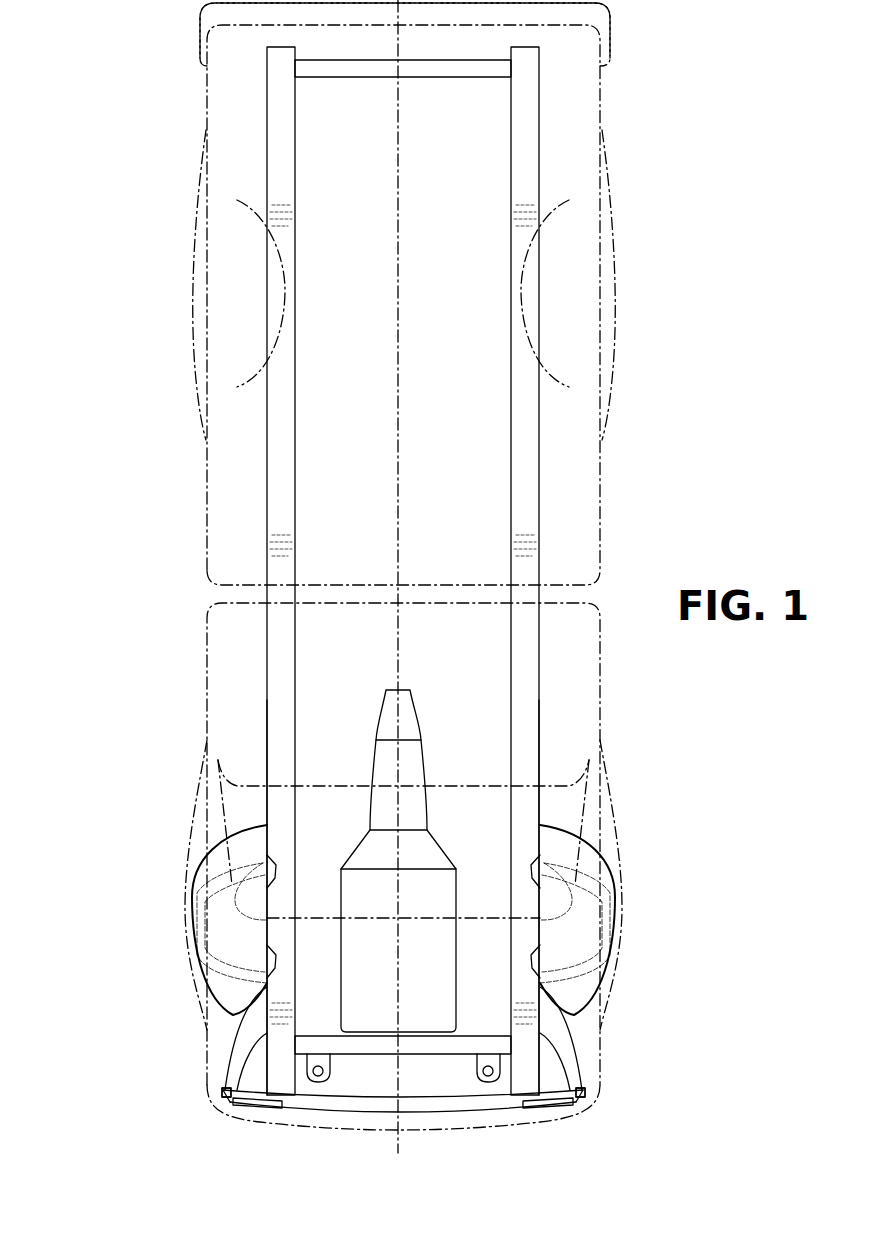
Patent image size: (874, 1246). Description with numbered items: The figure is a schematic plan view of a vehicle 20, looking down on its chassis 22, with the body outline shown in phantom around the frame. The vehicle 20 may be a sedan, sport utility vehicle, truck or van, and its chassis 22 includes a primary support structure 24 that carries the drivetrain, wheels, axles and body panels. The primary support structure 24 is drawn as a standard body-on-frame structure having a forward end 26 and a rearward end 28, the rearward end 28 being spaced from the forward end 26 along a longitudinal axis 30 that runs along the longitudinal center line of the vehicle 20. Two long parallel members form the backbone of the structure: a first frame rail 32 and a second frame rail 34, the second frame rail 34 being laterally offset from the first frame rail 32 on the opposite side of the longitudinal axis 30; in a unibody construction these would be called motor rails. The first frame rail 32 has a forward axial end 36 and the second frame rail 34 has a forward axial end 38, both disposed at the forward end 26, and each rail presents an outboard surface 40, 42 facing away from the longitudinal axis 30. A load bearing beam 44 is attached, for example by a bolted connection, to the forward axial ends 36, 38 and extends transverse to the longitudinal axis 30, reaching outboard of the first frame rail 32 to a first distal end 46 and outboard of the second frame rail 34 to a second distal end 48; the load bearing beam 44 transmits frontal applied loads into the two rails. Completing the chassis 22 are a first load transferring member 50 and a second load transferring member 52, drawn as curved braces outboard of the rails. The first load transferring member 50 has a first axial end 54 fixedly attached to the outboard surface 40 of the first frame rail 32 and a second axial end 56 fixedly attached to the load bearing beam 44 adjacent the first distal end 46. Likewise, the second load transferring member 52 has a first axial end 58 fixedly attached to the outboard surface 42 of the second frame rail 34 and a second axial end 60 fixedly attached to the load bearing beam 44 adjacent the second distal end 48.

The vehicle 20 is at (125, 78).
The chassis 22 is at (402, 571).
The primary support structure 24 is at (206, 571).
The forward end 26 is at (352, 1130).
The rearward end 28 is at (638, 0).
The longitudinal axis 30 is at (400, 380).
The first frame rail 32 is at (527, 460).
The second frame rail 34 is at (282, 460).
The forward axial end 36 is at (523, 1105).
The forward axial end 38 is at (282, 1105).
The outboard surface 40 is at (540, 713).
The outboard surface 42 is at (267, 713).
The load bearing beam 44 is at (448, 1108).
The first distal end 46 is at (583, 1090).
The second distal end 48 is at (222, 1090).
The first load transferring member 50 is at (573, 1043).
The second load transferring member 52 is at (232, 1043).
The first axial end 54 is at (522, 1003).
The second axial end 56 is at (580, 1098).
The first axial end 58 is at (283, 1003).
The second axial end 60 is at (224, 1098).